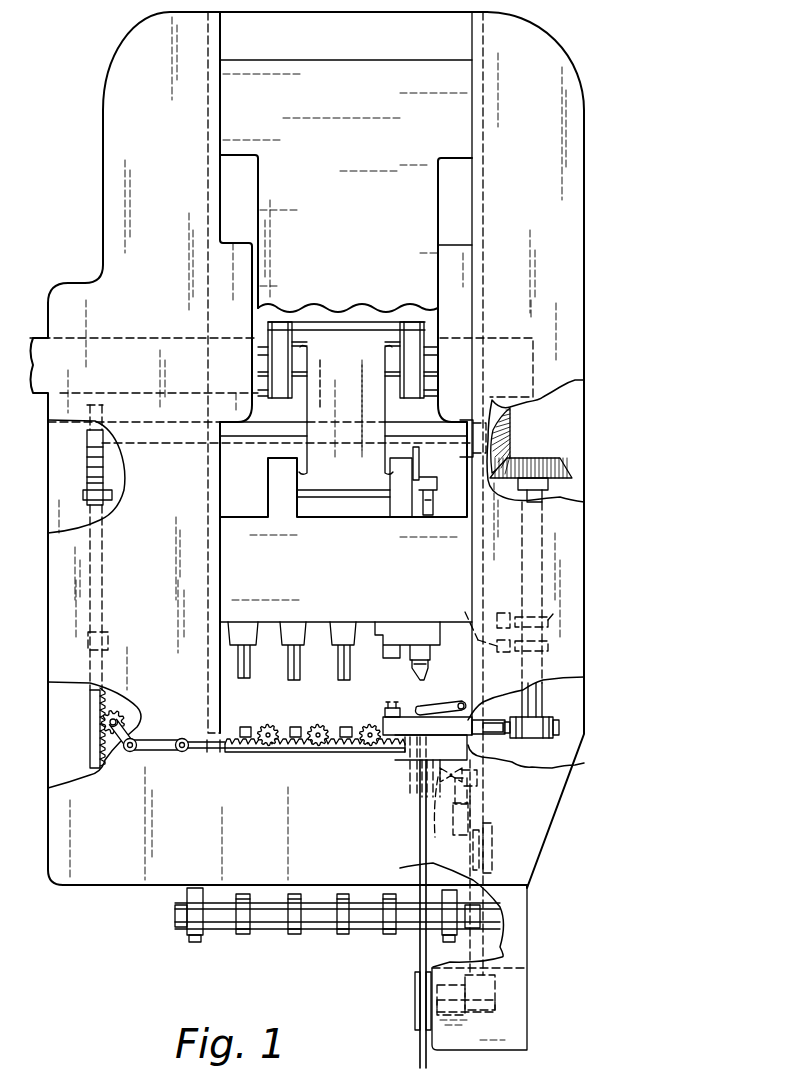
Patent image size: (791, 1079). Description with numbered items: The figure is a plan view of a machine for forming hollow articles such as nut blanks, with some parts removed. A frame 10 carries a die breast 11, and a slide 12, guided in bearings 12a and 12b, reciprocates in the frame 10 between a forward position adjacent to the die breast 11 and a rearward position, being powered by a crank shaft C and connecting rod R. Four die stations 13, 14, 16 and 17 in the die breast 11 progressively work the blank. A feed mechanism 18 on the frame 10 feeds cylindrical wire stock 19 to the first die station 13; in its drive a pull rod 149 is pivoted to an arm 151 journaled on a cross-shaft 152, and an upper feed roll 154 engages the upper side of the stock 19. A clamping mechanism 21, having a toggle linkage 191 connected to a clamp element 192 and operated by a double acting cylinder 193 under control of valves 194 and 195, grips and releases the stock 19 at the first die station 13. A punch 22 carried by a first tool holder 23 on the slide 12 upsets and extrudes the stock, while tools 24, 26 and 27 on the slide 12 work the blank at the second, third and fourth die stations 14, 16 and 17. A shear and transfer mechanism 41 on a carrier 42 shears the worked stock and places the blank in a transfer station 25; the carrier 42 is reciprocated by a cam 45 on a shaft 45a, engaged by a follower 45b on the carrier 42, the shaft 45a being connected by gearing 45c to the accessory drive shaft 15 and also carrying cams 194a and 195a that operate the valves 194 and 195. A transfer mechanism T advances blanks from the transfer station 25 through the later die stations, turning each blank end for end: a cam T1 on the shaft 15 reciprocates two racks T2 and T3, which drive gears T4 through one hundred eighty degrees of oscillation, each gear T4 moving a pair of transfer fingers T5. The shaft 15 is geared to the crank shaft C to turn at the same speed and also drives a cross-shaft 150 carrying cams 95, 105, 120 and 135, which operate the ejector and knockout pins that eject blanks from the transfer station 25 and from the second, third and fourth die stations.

The frame 10 is at (585, 313).
The die breast 11 is at (236, 767).
The slide 12 is at (362, 576).
The bearing 12a is at (212, 518).
The bearing 12b is at (218, 60).
The first die station 13 is at (488, 739).
The second die station 14 is at (343, 741).
The accessory drive shaft 15 is at (245, 437).
The third die station 16 is at (294, 754).
The fourth die station 17 is at (230, 747).
The feed mechanism 18 is at (530, 1021).
The wire stock 19 is at (418, 888).
The clamping mechanism 21 is at (467, 790).
The punch 22 is at (427, 677).
The first tool holder 23 is at (415, 632).
The tool 24 is at (343, 660).
The transfer station 25 is at (405, 734).
The tool 26 is at (292, 666).
The tool 27 is at (246, 660).
The shear and transfer mechanism 41 is at (388, 702).
The carrier 42 is at (452, 720).
The cam 45 is at (560, 726).
The shaft 45a is at (545, 693).
The follower 45b is at (507, 733).
The gearing 45c is at (534, 458).
The cam 95 is at (388, 937).
The cam 105 is at (344, 937).
The cam 120 is at (295, 937).
The cam 135 is at (243, 936).
The pull rod 149 is at (478, 940).
The cross-shaft 150 is at (363, 930).
The arm 151 is at (483, 973).
The cross-shaft 152 is at (513, 992).
The upper feed roll 154 is at (415, 1010).
The toggle linkage 191 is at (478, 776).
The clamp element 192 is at (462, 848).
The double acting cylinder 193 is at (468, 813).
The valve 194 is at (457, 619).
The cam 194a is at (553, 648).
The valve 195 is at (500, 612).
The cam 195a is at (553, 614).
The crank shaft C is at (432, 345).
The connecting rod R is at (350, 407).
The transfer mechanism T is at (198, 735).
The cam T1 is at (93, 452).
The rack T2 is at (93, 737).
The rack T3 is at (363, 753).
The gears T4 is at (266, 724).
The transfer fingers T5 is at (245, 727).